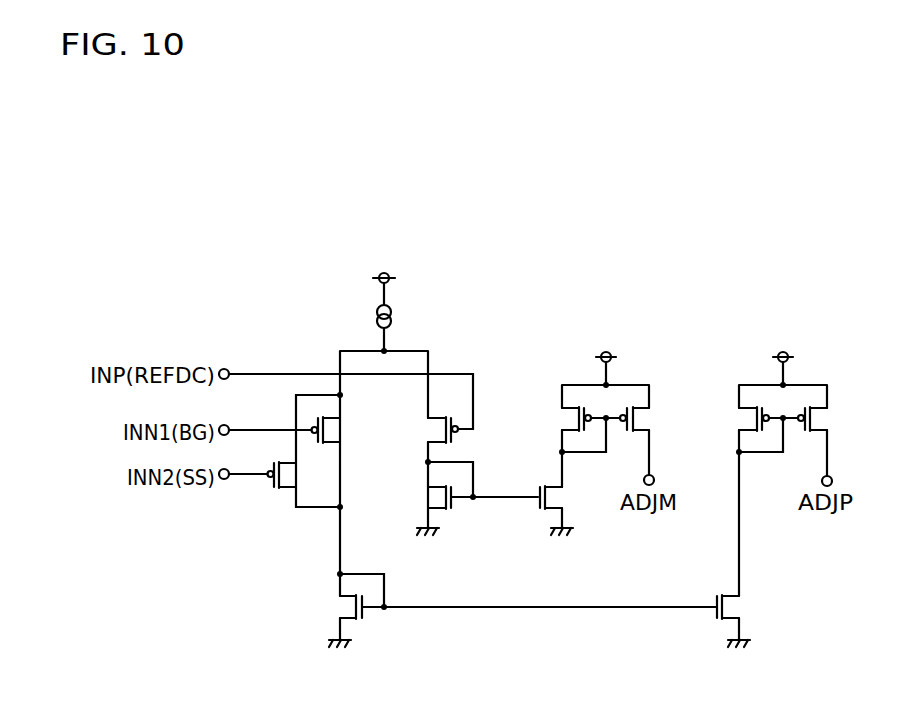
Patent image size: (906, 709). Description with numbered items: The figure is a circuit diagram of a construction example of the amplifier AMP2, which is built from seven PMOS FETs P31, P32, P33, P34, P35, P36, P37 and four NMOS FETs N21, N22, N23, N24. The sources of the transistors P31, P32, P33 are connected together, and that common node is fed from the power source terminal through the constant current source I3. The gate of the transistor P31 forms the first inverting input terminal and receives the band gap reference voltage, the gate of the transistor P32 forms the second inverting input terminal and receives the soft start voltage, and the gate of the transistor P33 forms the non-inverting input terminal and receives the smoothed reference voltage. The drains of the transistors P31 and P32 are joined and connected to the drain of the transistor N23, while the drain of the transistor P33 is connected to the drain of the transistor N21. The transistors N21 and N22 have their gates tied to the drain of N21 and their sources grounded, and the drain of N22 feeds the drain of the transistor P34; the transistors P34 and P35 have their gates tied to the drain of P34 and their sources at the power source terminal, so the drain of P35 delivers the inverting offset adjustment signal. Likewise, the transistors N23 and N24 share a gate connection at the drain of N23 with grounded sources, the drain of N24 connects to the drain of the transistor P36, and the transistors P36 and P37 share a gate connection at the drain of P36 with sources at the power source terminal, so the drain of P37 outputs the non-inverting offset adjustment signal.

The amplifier AMP2 is at (181, 282).
The constant current source I3 is at (395, 318).
The PMOS FET P31 is at (341, 424).
The PMOS FET P32 is at (283, 487).
The PMOS FET P33 is at (424, 436).
The PMOS FET P34 is at (562, 418).
The PMOS FET P35 is at (652, 414).
The PMOS FET P36 is at (737, 427).
The PMOS FET P37 is at (827, 420).
The NMOS FET N21 is at (447, 513).
The NMOS FET N22 is at (545, 513).
The NMOS FET N23 is at (340, 608).
The NMOS FET N24 is at (738, 608).